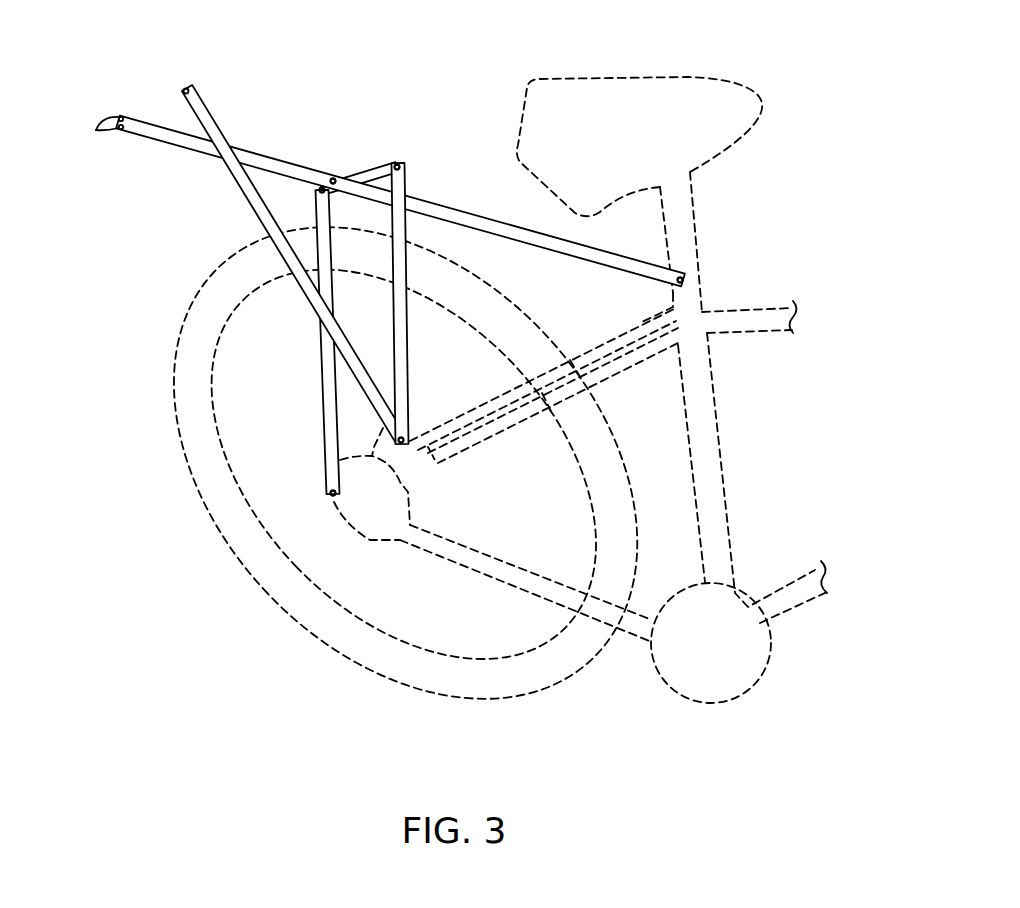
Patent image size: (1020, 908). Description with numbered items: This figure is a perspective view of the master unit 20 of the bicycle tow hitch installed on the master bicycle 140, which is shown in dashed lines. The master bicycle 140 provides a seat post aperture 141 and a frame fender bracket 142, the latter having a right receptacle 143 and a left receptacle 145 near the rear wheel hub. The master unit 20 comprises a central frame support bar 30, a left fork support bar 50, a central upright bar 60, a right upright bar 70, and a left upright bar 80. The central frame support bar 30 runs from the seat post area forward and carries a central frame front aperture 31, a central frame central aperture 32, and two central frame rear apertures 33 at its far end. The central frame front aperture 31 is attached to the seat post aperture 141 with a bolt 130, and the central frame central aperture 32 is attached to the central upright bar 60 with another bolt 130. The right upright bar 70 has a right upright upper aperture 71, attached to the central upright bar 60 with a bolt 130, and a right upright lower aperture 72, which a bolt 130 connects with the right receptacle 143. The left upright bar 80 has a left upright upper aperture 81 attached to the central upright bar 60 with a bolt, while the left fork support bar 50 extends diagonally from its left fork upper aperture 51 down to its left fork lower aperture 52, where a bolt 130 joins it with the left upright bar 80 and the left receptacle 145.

The master unit 20 is at (141, 212).
The central frame support bar 30 is at (489, 219).
The central frame front aperture 31 is at (676, 284).
The central frame central aperture 32 is at (335, 179).
The central frame rear apertures 33 is at (96, 130).
The left fork support bar 50 is at (252, 203).
The left fork upper aperture 51 is at (183, 90).
The left fork lower aperture 52 is at (402, 447).
The central upright bar 60 is at (372, 172).
The right upright bar 70 is at (316, 368).
The right upright upper aperture 71 is at (318, 190).
The right upright lower aperture 72 is at (332, 493).
The left upright bar 80 is at (392, 360).
The left upright upper aperture 81 is at (399, 165).
The bolt 130 is at (320, 189).
The master bicycle 140 is at (262, 650).
The seat post aperture 141 is at (690, 293).
The frame fender bracket 142 is at (306, 468).
The right receptacle 143 is at (334, 500).
The left receptacle 145 is at (408, 434).